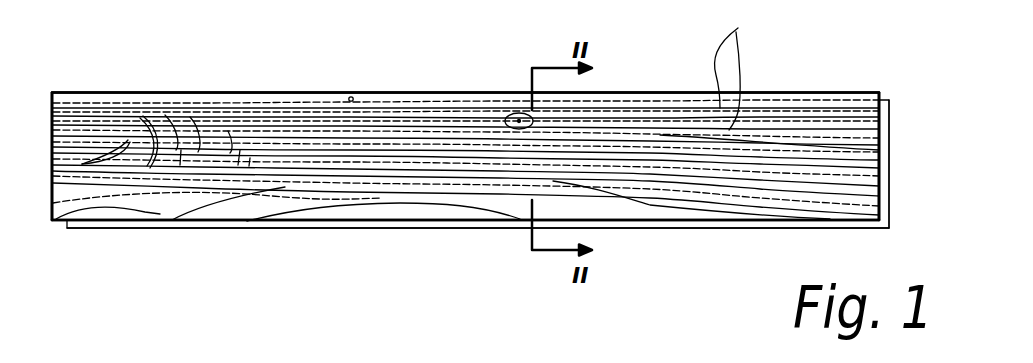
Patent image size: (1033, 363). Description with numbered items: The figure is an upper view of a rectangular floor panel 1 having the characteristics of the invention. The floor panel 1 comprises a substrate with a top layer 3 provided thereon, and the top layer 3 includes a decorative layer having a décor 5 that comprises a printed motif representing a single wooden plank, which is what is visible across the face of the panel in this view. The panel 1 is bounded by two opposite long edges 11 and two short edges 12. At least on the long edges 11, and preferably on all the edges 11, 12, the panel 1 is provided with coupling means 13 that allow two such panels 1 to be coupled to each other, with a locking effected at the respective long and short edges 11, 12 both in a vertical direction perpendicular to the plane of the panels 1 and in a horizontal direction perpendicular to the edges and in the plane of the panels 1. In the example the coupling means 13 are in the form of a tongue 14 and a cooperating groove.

The floor panel 1 is at (225, 85).
The top layer 3 is at (322, 92).
The décor 5 is at (737, 68).
The long edges 11 is at (468, 90).
The short edges 12 is at (52, 104).
The coupling means 13 is at (898, 103).
The tongue 14 is at (885, 225).